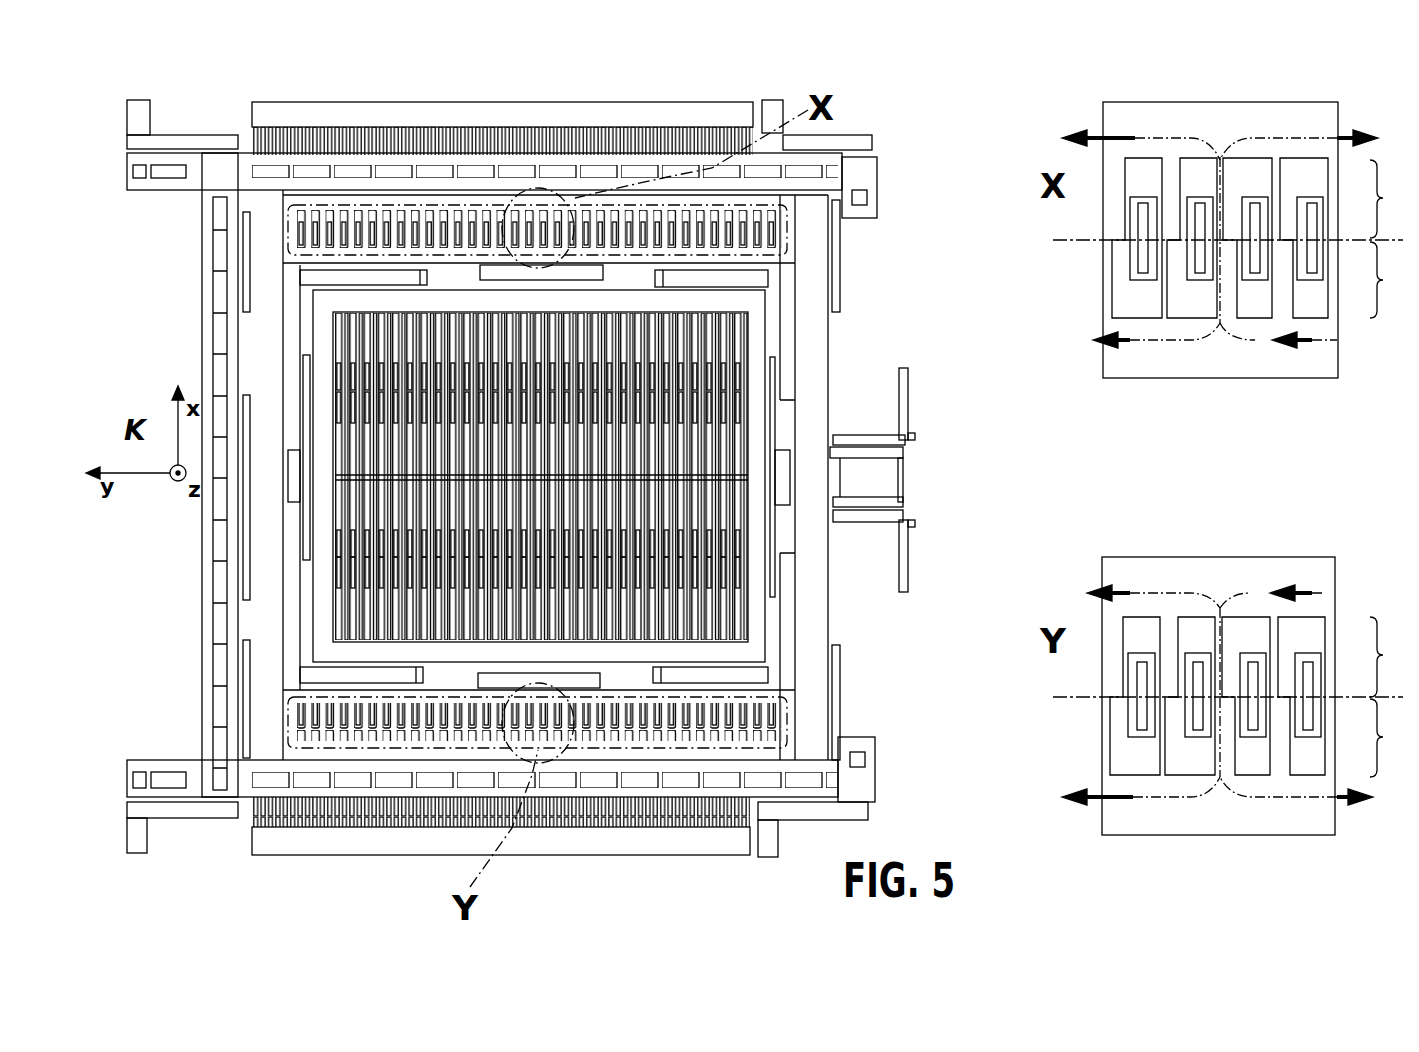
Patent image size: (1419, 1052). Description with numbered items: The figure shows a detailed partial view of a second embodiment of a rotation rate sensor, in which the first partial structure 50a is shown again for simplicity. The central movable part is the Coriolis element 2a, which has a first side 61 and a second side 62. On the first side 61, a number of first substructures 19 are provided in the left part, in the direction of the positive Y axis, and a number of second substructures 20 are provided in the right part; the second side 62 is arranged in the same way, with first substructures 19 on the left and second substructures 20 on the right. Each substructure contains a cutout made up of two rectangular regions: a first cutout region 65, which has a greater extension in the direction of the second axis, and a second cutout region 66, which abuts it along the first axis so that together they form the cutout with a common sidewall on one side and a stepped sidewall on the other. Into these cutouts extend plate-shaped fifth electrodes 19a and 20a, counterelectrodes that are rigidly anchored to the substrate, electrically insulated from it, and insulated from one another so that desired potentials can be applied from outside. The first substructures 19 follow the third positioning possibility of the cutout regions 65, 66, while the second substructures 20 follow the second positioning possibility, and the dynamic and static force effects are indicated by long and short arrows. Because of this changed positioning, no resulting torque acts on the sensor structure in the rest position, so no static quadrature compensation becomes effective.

The Coriolis element 2a is at (790, 297).
The first partial structure 50a is at (763, 80).
The first side 61 is at (182, 200).
The second side 62 is at (182, 650).
The first substructure 19 is at (367, 235).
The second substructure 20 is at (712, 227).
The fifth electrode 19a is at (1193, 267).
The fifth electrode 20a is at (1255, 270).
The first cutout region 65 is at (1392, 428).
The second cutout region 66 is at (1392, 509).